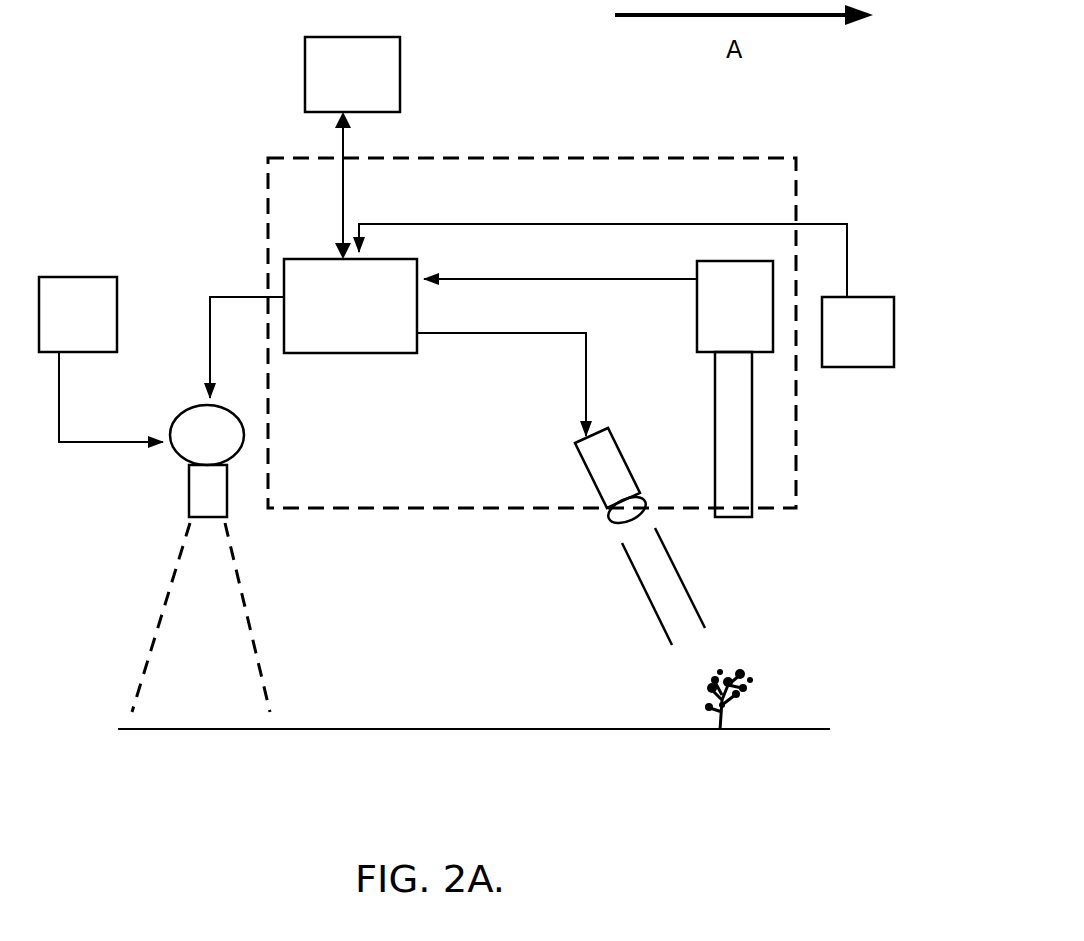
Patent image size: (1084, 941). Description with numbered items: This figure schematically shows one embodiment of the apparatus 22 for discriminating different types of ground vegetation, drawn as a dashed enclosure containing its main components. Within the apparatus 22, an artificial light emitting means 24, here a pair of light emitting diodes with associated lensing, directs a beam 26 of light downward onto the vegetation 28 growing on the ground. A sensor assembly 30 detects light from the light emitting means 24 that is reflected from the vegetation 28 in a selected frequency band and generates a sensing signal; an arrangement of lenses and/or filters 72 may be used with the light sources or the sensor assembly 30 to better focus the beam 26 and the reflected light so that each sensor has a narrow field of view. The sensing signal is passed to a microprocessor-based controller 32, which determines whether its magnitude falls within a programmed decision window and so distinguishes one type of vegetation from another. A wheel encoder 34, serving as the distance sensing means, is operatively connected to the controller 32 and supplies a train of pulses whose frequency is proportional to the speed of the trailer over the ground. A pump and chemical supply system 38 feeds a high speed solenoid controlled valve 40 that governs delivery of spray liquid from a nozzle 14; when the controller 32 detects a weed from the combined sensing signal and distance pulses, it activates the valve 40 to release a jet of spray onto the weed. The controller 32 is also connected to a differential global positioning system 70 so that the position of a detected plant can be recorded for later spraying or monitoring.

The nozzle 14 is at (189, 503).
The apparatus for discriminating different types of ground vegetation 22 is at (287, 150).
The artificial light emitting means 24 is at (580, 463).
The beam of light 26 is at (636, 592).
The vegetation 28 is at (765, 678).
The sensor assembly 30 is at (735, 306).
The microprocessor-based controller 32 is at (350, 306).
The wheel encoder 34 is at (858, 332).
The pump and chemical supply system 38 is at (78, 314).
The solenoid controlled valve 40 is at (193, 407).
The differential global positioning system (dGPS) 70 is at (352, 74).
The arrangement of lenses and/or filters 72 is at (753, 463).